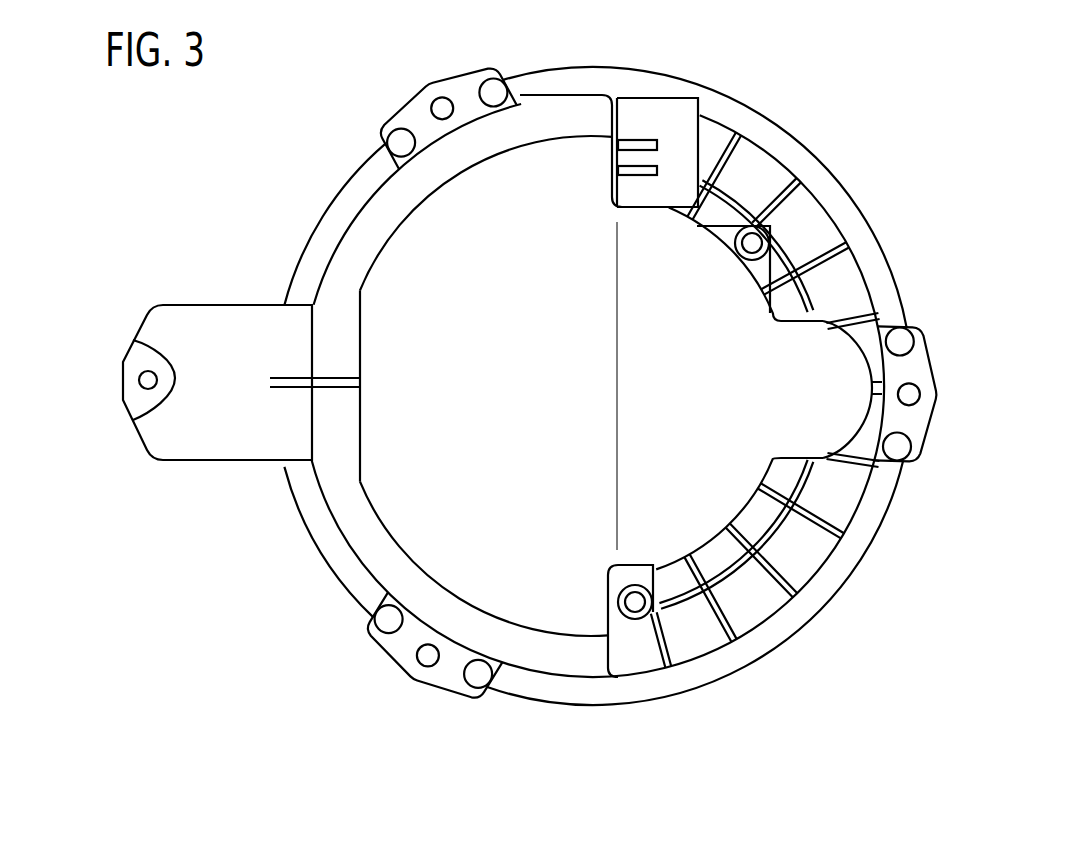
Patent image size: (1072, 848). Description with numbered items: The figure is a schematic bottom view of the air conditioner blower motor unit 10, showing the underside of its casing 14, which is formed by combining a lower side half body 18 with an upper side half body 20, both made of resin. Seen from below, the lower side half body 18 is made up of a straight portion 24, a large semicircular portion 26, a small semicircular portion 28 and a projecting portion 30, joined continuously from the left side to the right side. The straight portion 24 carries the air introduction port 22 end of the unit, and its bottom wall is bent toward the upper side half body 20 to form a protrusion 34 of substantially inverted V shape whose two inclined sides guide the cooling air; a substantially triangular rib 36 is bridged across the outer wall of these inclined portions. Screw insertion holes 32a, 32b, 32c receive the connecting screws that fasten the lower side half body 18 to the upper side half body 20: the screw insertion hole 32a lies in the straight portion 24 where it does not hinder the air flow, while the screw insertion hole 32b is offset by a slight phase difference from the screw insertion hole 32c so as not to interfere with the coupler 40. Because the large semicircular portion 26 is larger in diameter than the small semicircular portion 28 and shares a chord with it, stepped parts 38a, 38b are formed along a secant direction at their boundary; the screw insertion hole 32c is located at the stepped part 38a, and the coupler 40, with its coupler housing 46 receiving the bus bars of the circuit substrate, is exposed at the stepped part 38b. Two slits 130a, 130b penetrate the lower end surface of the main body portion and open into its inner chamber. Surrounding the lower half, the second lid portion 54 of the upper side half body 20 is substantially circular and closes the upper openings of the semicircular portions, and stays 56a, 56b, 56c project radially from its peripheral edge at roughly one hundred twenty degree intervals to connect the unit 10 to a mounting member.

The air conditioner blower motor unit 10 is at (222, 167).
The casing 14 is at (650, 768).
The lower side half body 18 is at (595, 395).
The upper side half body 20 is at (595, 421).
The air introduction port 22 is at (164, 372).
The straight portion 24 is at (213, 430).
The large semicircular portion 26 is at (412, 527).
The small semicircular portion 28 is at (725, 487).
The projecting portion 30 is at (818, 430).
The screw insertion hole 32a is at (140, 385).
The screw insertion hole 32b is at (750, 255).
The screw insertion hole 32c is at (627, 597).
The protrusion 34 is at (292, 330).
The rib 36 is at (333, 390).
The stepped part 38a is at (607, 657).
The stepped part 38b is at (622, 206).
The coupler 40 is at (637, 118).
The coupler housing 46 is at (673, 112).
The second lid portion 54 is at (723, 112).
The stay 56a is at (415, 116).
The stay 56b is at (928, 398).
The stay 56c is at (445, 678).
The slit 130a is at (571, 115).
The slit 130b is at (613, 158).